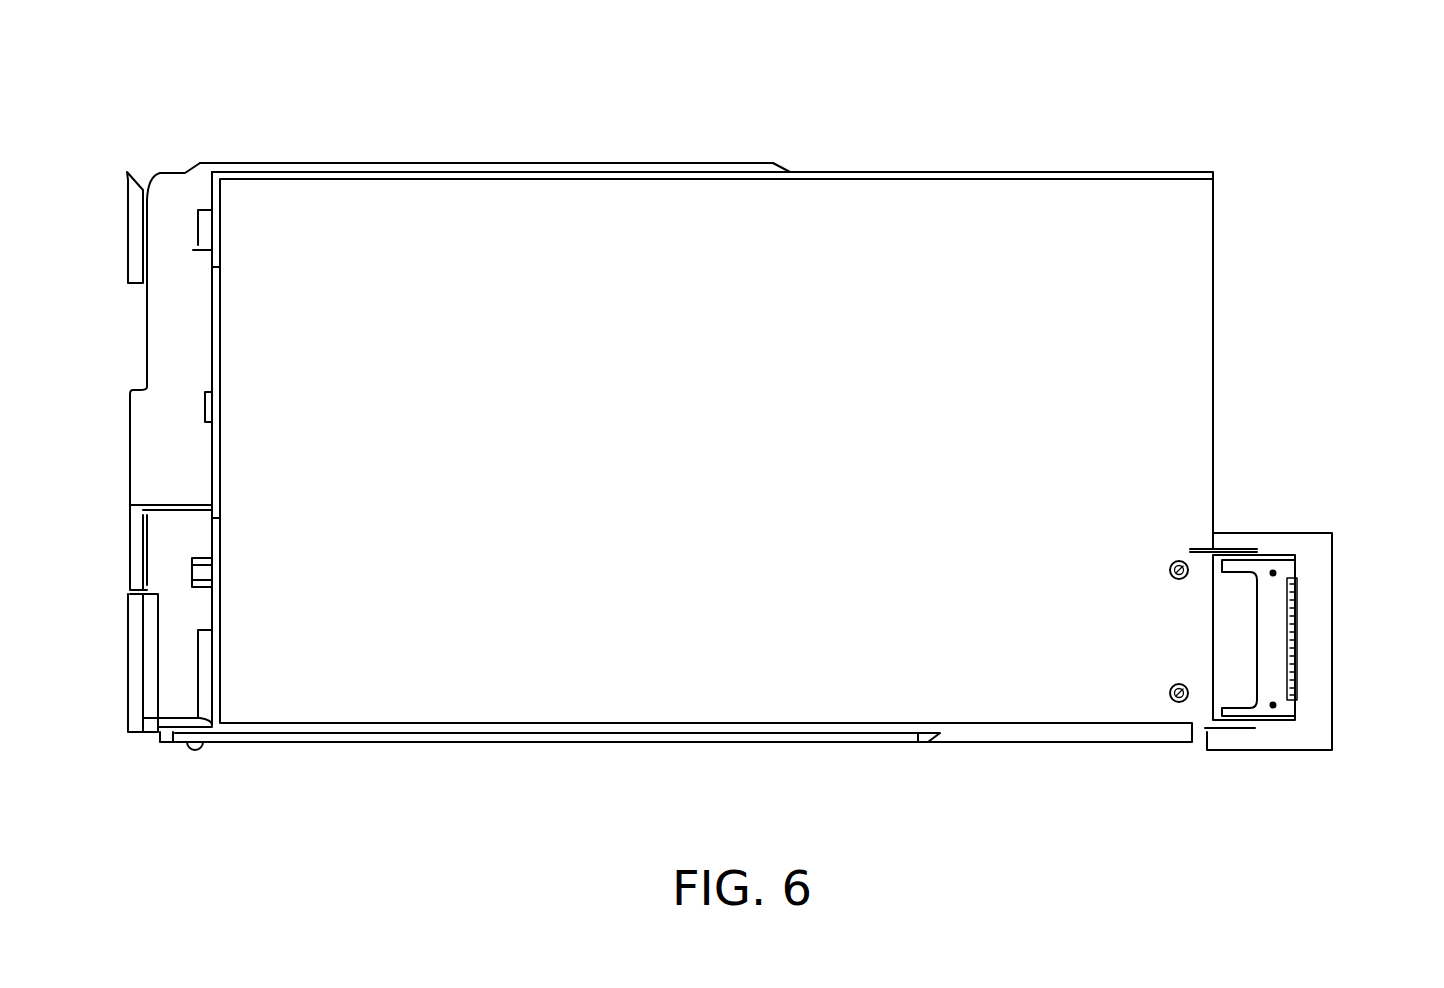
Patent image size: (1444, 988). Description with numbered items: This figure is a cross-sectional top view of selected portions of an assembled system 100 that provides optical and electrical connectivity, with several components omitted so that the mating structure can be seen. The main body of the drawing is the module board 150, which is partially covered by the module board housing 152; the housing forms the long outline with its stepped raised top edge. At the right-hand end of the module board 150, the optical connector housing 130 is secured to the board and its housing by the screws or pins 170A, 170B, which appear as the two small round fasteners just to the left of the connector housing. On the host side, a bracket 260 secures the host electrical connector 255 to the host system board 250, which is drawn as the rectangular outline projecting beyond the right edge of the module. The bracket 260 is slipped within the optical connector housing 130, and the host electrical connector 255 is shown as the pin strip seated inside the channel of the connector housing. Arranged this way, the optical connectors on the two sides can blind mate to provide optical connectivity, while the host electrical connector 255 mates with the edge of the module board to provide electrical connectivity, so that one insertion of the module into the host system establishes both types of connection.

The assembled system 100 is at (1160, 92).
The module board housing 152 is at (920, 172).
The module board 150 is at (1213, 338).
The screw or pin 170B is at (1190, 552).
The screw or pin 170A is at (1174, 703).
The optical connector housing 130 is at (1215, 550).
The host system board 250 is at (1305, 533).
The host electrical connector 255 is at (1302, 642).
The bracket 260 is at (1270, 690).